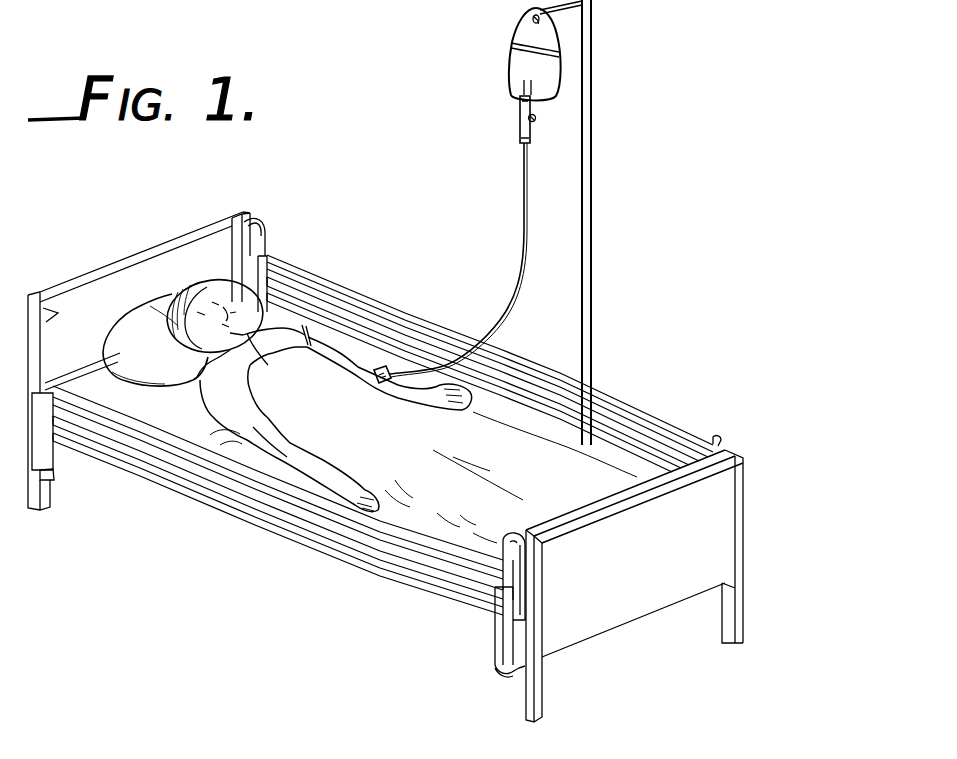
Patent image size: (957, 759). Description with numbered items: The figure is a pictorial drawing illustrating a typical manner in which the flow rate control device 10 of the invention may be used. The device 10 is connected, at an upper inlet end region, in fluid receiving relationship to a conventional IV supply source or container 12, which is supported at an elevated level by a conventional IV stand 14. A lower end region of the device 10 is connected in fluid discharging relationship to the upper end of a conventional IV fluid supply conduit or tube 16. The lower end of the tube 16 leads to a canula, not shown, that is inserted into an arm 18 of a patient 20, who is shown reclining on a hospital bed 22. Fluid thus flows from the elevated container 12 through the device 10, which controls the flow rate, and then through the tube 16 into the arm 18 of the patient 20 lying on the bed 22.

The flow rate control device 10 is at (521, 133).
The IV supply container 12 is at (510, 58).
The IV stand 14 is at (594, 114).
The IV fluid supply tube 16 is at (522, 228).
The arm 18 is at (375, 362).
The patient 20 is at (304, 336).
The hospital bed 22 is at (748, 461).